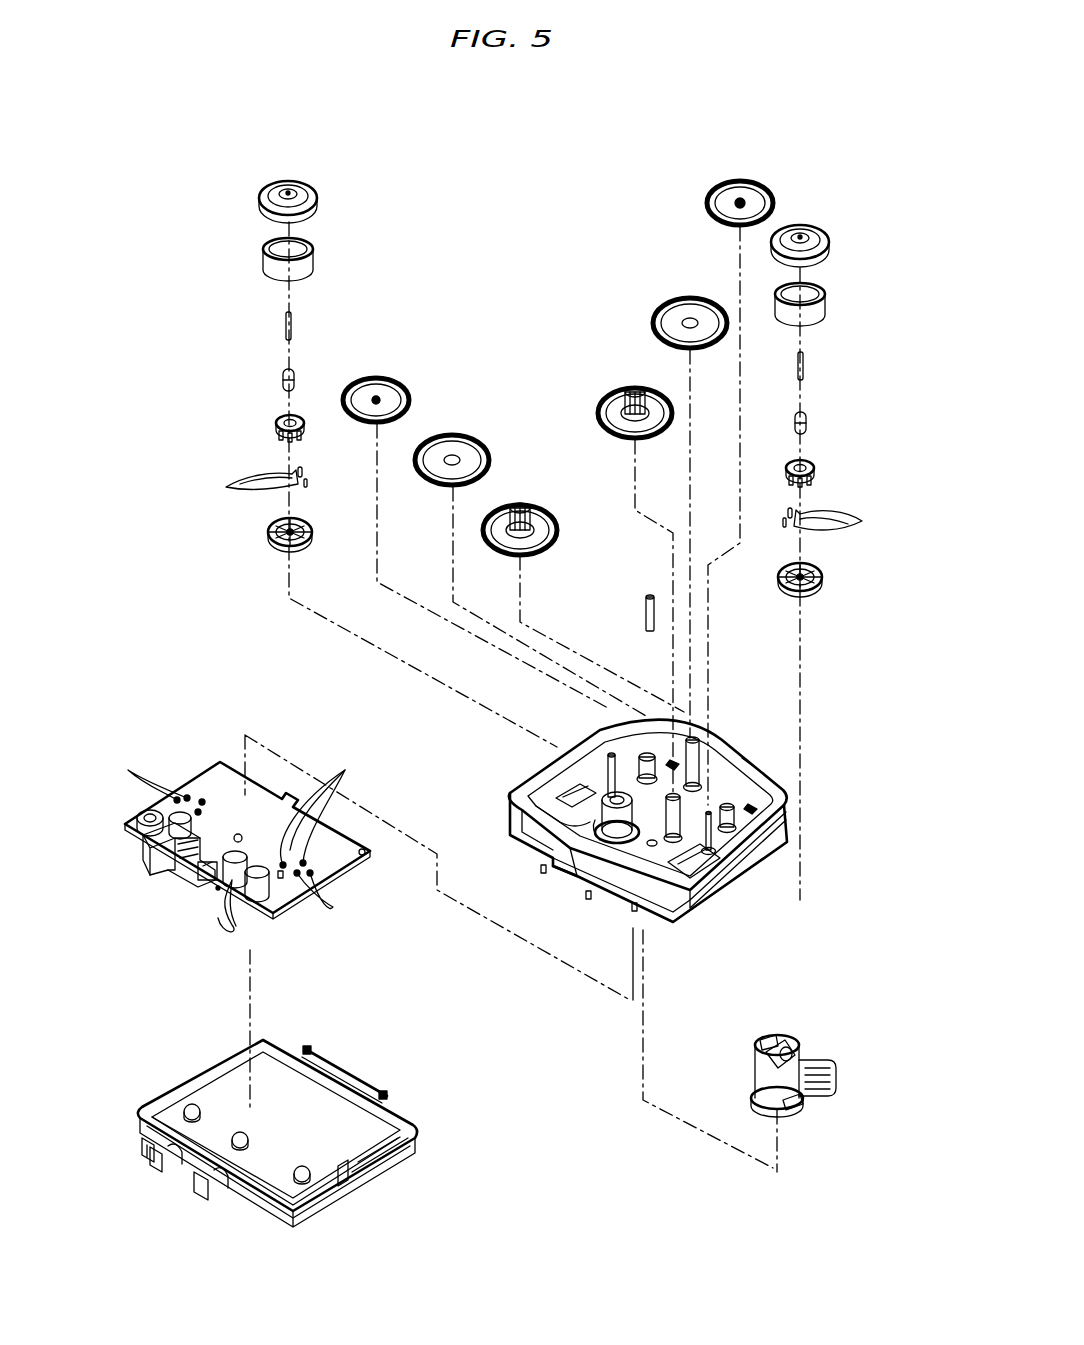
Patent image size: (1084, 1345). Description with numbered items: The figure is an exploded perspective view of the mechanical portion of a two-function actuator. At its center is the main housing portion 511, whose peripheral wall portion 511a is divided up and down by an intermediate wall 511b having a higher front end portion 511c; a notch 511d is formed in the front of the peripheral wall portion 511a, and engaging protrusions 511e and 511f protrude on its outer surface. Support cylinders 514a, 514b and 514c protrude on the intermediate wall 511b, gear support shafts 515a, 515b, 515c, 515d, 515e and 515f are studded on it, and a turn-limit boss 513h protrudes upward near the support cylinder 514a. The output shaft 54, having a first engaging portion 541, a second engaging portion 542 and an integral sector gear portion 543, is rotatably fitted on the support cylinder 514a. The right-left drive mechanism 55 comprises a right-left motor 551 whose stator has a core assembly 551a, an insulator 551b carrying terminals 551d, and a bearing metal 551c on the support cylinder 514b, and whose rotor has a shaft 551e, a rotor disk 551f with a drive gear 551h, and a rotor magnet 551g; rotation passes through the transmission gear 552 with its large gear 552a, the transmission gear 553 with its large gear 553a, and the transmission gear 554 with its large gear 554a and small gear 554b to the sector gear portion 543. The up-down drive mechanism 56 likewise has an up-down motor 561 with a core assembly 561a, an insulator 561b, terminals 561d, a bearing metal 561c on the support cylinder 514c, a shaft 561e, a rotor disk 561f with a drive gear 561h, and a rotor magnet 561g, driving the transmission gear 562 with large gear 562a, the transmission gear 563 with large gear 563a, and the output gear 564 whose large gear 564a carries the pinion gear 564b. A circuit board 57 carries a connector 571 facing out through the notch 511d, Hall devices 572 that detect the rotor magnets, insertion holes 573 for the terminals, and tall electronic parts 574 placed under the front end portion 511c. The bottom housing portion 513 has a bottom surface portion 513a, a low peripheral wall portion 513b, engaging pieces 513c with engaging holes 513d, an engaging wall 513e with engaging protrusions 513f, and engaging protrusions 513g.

The up-down drive mechanism 56 is at (320, 167).
The drive gear 561h is at (284, 188).
The rotor disk 561f is at (318, 200).
The rotor magnet 561g is at (316, 255).
The shaft 561e is at (293, 321).
The up-down motor 561 is at (270, 349).
The bearing metal 561c is at (281, 380).
The insulator 561b is at (277, 427).
The terminals 561d is at (227, 486).
The core assembly 561a is at (270, 529).
The transmission gear 562 is at (387, 379).
The large gear 562a is at (386, 397).
The transmission gear 563 is at (458, 431).
The large gear 563a is at (462, 454).
The output gear 564 is at (484, 545).
The large gear 564a is at (486, 519).
The pinion gear 564b is at (521, 505).
The right-left drive mechanism 55 is at (794, 167).
The transmission gear 552 is at (735, 182).
The large gear 552a is at (728, 198).
The drive gear 551h is at (804, 231).
The rotor disk 551f is at (830, 239).
The rotor magnet 551g is at (828, 297).
The shaft 551e is at (807, 370).
The right-left motor 551 is at (822, 399).
The bearing metal 551c is at (810, 423).
The insulator 551b is at (818, 470).
The terminals 551d is at (861, 521).
The core assembly 551a is at (824, 576).
The transmission gear 553 is at (690, 298).
The large gear 553a is at (662, 309).
The transmission gear 554 is at (600, 406).
The large gear 554a is at (618, 448).
The small gear 554b is at (630, 386).
The turn-limit boss 513h is at (647, 618).
The gear support shaft 515e is at (644, 738).
The gear support shaft 515f is at (712, 724).
The gear support shaft 515d is at (585, 752).
The intermediate wall 511b is at (750, 764).
The gear support shaft 515c is at (790, 776).
The support cylinder 514c is at (585, 768).
The main housing portion 511 is at (772, 807).
The support cylinder 514a is at (566, 812).
The gear support shaft 515b is at (775, 837).
The front end portion 511c is at (530, 860).
The gear support shaft 515a is at (745, 860).
The notch 511d is at (552, 902).
The support cylinder 514b is at (720, 902).
The engaging protrusions 511f is at (580, 905).
The peripheral wall portion 511a is at (688, 912).
The engaging protrusions 511e is at (630, 918).
The circuit board 57 is at (222, 790).
The Hall devices 572 is at (198, 805).
The insertion holes 573 is at (177, 805).
The tall electronic parts 574 is at (150, 863).
The connector 571 is at (172, 880).
The bottom housing portion 513 is at (410, 1123).
The bottom surface portion 513a is at (228, 1100).
The peripheral wall portion 513b is at (372, 1152).
The engaging pieces 513c is at (180, 1185).
The engaging holes 513d is at (142, 1152).
The engaging wall 513e is at (340, 1065).
The engaging protrusions 513f is at (307, 1050).
The engaging protrusions 513g is at (343, 1178).
The output shaft 54 is at (760, 1096).
The first engaging portion 541 is at (788, 1040).
The second engaging portion 542 is at (768, 1041).
The sector gear portion 543 is at (825, 1060).